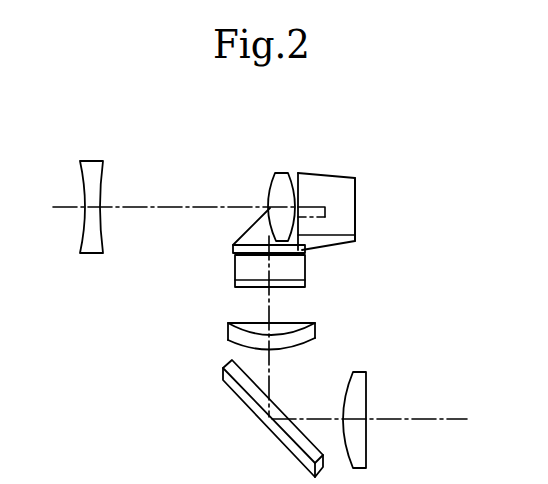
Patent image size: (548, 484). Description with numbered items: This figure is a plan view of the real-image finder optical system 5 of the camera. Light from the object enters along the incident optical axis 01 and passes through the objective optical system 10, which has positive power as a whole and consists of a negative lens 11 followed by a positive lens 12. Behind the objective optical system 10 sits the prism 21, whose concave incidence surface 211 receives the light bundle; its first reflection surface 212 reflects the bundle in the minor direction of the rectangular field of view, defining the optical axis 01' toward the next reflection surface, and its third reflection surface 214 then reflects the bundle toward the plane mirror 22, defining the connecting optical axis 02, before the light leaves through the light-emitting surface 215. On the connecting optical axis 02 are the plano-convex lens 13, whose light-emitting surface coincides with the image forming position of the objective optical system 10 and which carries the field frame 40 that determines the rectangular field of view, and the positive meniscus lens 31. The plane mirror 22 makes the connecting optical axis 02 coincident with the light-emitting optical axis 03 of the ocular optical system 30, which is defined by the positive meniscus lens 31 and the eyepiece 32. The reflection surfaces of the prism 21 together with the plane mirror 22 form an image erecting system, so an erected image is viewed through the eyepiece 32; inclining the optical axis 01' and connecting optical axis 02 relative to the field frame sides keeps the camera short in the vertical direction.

The finder optical system 5 is at (113, 128).
The objective optical system 10 is at (298, 158).
The negative lens 11 is at (93, 174).
The positive lens 12 is at (268, 173).
The plano-convex lens 13 is at (306, 267).
The prism 21 is at (355, 221).
The incidence surface 211 is at (307, 184).
The first reflection surface 212 is at (338, 184).
The third reflection surface 214 is at (236, 217).
The light-emitting surface 215 is at (246, 252).
The plane mirror 22 is at (245, 412).
The ocular optical system 30 is at (442, 337).
The positive meniscus lens 31 is at (316, 324).
The eyepiece 32 is at (368, 391).
The field frame 40 is at (245, 287).
The incident optical axis 01 is at (189, 249).
The optical axis 01' is at (412, 208).
The connecting optical axis 02 is at (272, 372).
The light-emitting optical axis 03 is at (464, 408).